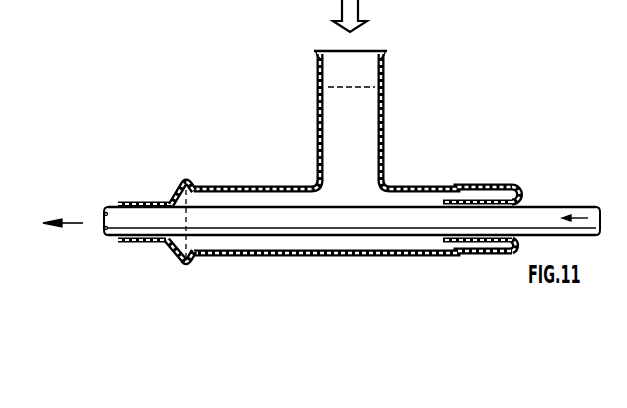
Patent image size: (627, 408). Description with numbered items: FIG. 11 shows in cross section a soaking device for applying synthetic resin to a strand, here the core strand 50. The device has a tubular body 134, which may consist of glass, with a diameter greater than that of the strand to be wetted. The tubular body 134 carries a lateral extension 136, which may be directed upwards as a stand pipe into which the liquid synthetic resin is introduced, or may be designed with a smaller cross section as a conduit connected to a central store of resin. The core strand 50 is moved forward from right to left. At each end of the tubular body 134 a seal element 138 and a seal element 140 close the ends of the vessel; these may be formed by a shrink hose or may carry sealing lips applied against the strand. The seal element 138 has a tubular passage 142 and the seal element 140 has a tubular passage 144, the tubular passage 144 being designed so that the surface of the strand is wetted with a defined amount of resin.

The core strand 50 is at (125, 212).
The tubular body 134 is at (417, 184).
The lateral extension 136 is at (384, 100).
The seal element 138 is at (522, 185).
The seal element 140 is at (195, 183).
The tubular passage 142 is at (483, 202).
The tubular passage 144 is at (142, 243).